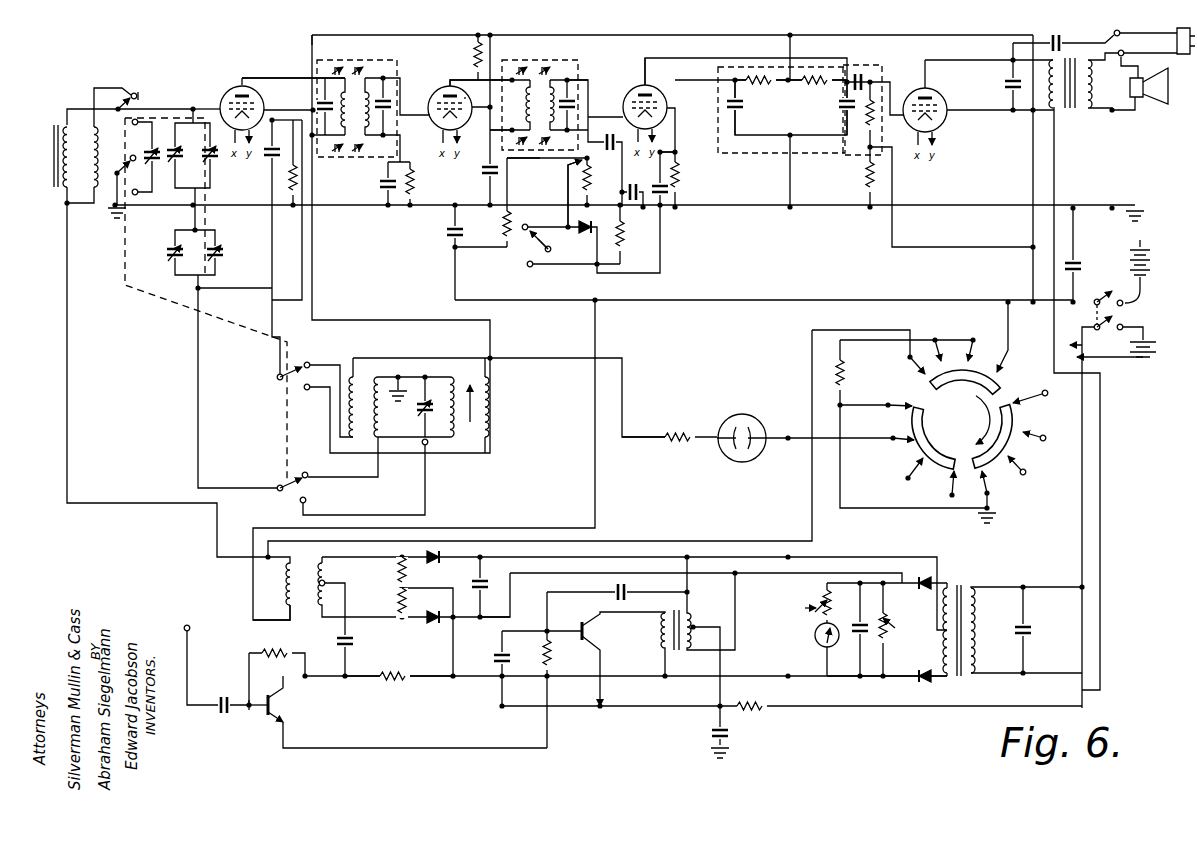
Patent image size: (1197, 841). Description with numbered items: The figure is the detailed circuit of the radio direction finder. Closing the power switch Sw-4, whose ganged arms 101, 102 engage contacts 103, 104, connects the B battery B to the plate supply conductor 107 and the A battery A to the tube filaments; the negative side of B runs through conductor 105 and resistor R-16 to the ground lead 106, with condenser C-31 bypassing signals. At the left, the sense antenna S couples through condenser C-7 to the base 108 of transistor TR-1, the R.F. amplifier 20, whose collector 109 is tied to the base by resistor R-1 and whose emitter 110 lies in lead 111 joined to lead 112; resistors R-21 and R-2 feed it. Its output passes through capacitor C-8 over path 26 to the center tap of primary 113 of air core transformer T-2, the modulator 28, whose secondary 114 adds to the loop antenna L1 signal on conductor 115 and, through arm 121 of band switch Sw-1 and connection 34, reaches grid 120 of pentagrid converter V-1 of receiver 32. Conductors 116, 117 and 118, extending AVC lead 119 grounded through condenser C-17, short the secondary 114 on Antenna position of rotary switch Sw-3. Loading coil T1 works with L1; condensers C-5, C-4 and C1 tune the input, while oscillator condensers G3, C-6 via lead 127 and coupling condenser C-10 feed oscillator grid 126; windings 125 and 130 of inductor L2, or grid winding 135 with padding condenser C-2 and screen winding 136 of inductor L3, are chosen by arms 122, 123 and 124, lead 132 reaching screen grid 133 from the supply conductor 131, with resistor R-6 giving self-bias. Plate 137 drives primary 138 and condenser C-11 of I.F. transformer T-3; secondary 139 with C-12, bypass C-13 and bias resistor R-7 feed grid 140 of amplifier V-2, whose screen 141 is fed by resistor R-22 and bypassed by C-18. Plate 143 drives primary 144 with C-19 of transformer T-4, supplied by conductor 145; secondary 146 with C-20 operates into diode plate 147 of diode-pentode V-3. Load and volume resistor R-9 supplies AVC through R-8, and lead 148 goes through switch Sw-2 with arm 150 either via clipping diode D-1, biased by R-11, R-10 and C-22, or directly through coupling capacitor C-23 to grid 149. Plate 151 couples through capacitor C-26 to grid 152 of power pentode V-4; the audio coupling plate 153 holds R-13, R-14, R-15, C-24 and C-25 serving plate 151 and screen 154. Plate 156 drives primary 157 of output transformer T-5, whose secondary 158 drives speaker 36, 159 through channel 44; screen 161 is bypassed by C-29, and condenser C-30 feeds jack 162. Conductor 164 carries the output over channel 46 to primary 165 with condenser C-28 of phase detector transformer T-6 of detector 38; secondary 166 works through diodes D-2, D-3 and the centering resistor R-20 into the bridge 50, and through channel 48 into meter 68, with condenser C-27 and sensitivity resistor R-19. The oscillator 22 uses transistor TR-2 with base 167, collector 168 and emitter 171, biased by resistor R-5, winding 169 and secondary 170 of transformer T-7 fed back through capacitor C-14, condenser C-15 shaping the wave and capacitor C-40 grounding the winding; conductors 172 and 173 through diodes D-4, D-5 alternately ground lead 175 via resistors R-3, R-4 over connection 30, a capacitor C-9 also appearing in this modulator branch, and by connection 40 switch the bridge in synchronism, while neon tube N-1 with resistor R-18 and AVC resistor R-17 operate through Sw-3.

The receiver 32 is at (282, 40).
The B+ conductor 107 is at (740, 35).
The common or ground lead 106 is at (762, 207).
The B+ conductor 131 is at (560, 364).
The loading coil winding T1 is at (86, 110).
The loop antenna L1 is at (60, 124).
The arm of switch Sw-1 121 is at (124, 91).
The connection 34 is at (169, 109).
The arm of switch Sw-1 122 is at (121, 165).
The additional condenser C1 is at (148, 153).
The principal R.F. tuning condenser C-5 is at (187, 145).
The padding condenser C-4 is at (199, 163).
The grid 120 is at (225, 106).
The pentagrid converter tube V-1 is at (240, 84).
The plate 137 is at (256, 73).
The primary winding 138 is at (300, 78).
The screen grid 133 is at (283, 95).
The condenser C-11 is at (320, 104).
The oscillator grid 126 is at (272, 120).
The coupling condenser C-10 is at (272, 164).
The resistor R-6 is at (300, 176).
The local oscillator tuning condenser G3 is at (164, 249).
The local oscillator tuning condenser C-6 is at (219, 246).
The lead 127 is at (258, 290).
The lead 132 is at (300, 271).
The band switch Sw-1 is at (176, 314).
The arm of switch Sw-1 123 is at (278, 389).
The arm of switch Sw-1 124 is at (278, 494).
The conductor 115 is at (68, 472).
The winding 130 is at (364, 440).
The inductive element L2 is at (360, 400).
The winding 125 is at (382, 418).
The padding condenser C-2 is at (418, 400).
The grid winding 135 is at (456, 446).
The inductor L3 is at (474, 399).
The screen-grid winding 136 is at (490, 408).
The AVC lead 119 is at (453, 269).
The conductor 118 is at (887, 304).
The conductor 116 is at (597, 508).
The conductor 117 is at (656, 542).
The conductor 172 is at (632, 563).
The conductor 173 is at (666, 578).
The lead 112 is at (790, 652).
The lead 111 is at (425, 749).
The conductor 105 is at (997, 253).
The conductor 164 is at (1058, 192).
The channel 46 is at (1090, 481).
The first I.F. transformer T-3 is at (348, 66).
The secondary winding 139 is at (368, 82).
The condenser C-12 is at (388, 112).
The condenser C-13 is at (375, 186).
The resistor R-7 is at (416, 190).
The dropping resistor R-22 is at (465, 57).
The plate 143 is at (460, 86).
The I.F. amplifier tube V-2 is at (434, 99).
The grid 140 is at (420, 103).
The screen grid 141 is at (469, 90).
The conductor 145 is at (494, 38).
The condenser C-18 is at (480, 170).
The condenser C-17 is at (446, 232).
The I.F. transformer T-4 is at (537, 70).
The primary winding 144 is at (516, 66).
The secondary winding 146 is at (553, 66).
The capacitor C-20 is at (576, 98).
The condenser C-19 is at (495, 139).
The diode plate 147 is at (595, 143).
The resistor R-8 is at (527, 200).
The lead 148 is at (552, 176).
The detector load resistor R-9 is at (570, 165).
The resistor R-10 is at (603, 181).
The switch Sw-2 is at (521, 258).
The arm 150 is at (544, 234).
The diode D-1 is at (596, 219).
The resistor R-11 is at (624, 242).
The capacitor C-22 is at (640, 180).
The coupling capacitor C-23 is at (664, 210).
The audio coupling plate 153 is at (764, 58).
The diode-pentode mixer tube V-3 is at (640, 94).
The plate 151 is at (648, 86).
The screen grid 154 is at (676, 86).
The grid 149 is at (668, 120).
The resistor R-13 is at (752, 82).
The resistor R-14 is at (824, 84).
The capacitor C-24 is at (741, 108).
The capacitor C-25 is at (842, 110).
The resistor R-15 is at (864, 126).
The voltage dropping resistor R-16 is at (868, 176).
The coupling capacitor C-26 is at (860, 72).
The grid 152 is at (884, 90).
The power amplifier pentode V-4 is at (912, 70).
The plate 156 is at (924, 88).
The channel 44 is at (983, 88).
The capacitor C-29 is at (1006, 87).
The screen grid 161 is at (982, 112).
The condenser C-30 is at (1038, 32).
The output transformer T-5 is at (1072, 56).
The primary winding 157 is at (1046, 110).
The secondary winding 158 is at (1090, 110).
The jack 162 is at (1134, 40).
The speaker 36 is at (1145, 106).
The permanent magnet speaker 159 is at (1149, 106).
The condenser C-31 is at (1089, 255).
The B battery B is at (1148, 268).
The arm 101 is at (1096, 291).
The power switch Sw-4 is at (1086, 317).
The contact 103 is at (1124, 303).
The contact 104 is at (1124, 324).
The arm 102 is at (1110, 348).
The A battery A is at (1155, 348).
The dropping resistor R-18 is at (698, 416).
The neon tube N-1 is at (762, 414).
The resistor R-17 is at (847, 380).
The function switch Sw-3 is at (968, 431).
The modulator 28 is at (277, 592).
The air core transformer T-2 is at (401, 579).
The primary winding 113 is at (328, 562).
The secondary winding 114 is at (272, 600).
The diode D-4 is at (440, 557).
The resistor R-3 is at (396, 574).
The lead 175 is at (424, 590).
The resistor R-4 is at (385, 603).
The diode D-5 is at (438, 612).
The capacitor C-9 is at (489, 587).
The path 26 is at (343, 630).
The capacitor C-8 is at (354, 644).
The high ohmage resistor R-1 is at (277, 667).
The sense antenna S is at (189, 646).
The coupling condenser C-7 is at (220, 702).
The transistor TR-1 is at (291, 704).
The base 108 is at (262, 712).
The collector 109 is at (284, 691).
The emitter 110 is at (286, 713).
The R.F. amplifier 20 is at (246, 720).
The resistor R-2 is at (399, 682).
The condenser C-15 is at (490, 660).
The connection 30 is at (540, 594).
The base 167 is at (582, 626).
The capacitor C-14 is at (612, 585).
The transistor TR-2 is at (603, 631).
The collector 168 is at (600, 608).
The emitter 171 is at (600, 650).
The winding 169 is at (662, 628).
The oscillator transformer T-7 is at (675, 613).
The secondary winding 170 is at (693, 622).
The resistor R-5 is at (553, 658).
The oscillator 22 is at (633, 659).
The resistor R-21 is at (744, 717).
The capacitor C-40 is at (728, 736).
The connection 40 is at (879, 618).
The condenser C-27 is at (864, 618).
The diode D-2 is at (919, 575).
The phase detector transformer T-6 is at (959, 583).
The secondary winding 166 is at (946, 670).
The primary winding 165 is at (985, 648).
The gated phase detector 38 is at (987, 582).
The condenser C-28 is at (1028, 618).
The resistor R-19 is at (815, 603).
The left-right heading indicator 50 is at (814, 608).
The meter 68 is at (818, 646).
The resistor R-20 is at (906, 629).
The diode D-3 is at (925, 673).
The channel 48 is at (900, 656).